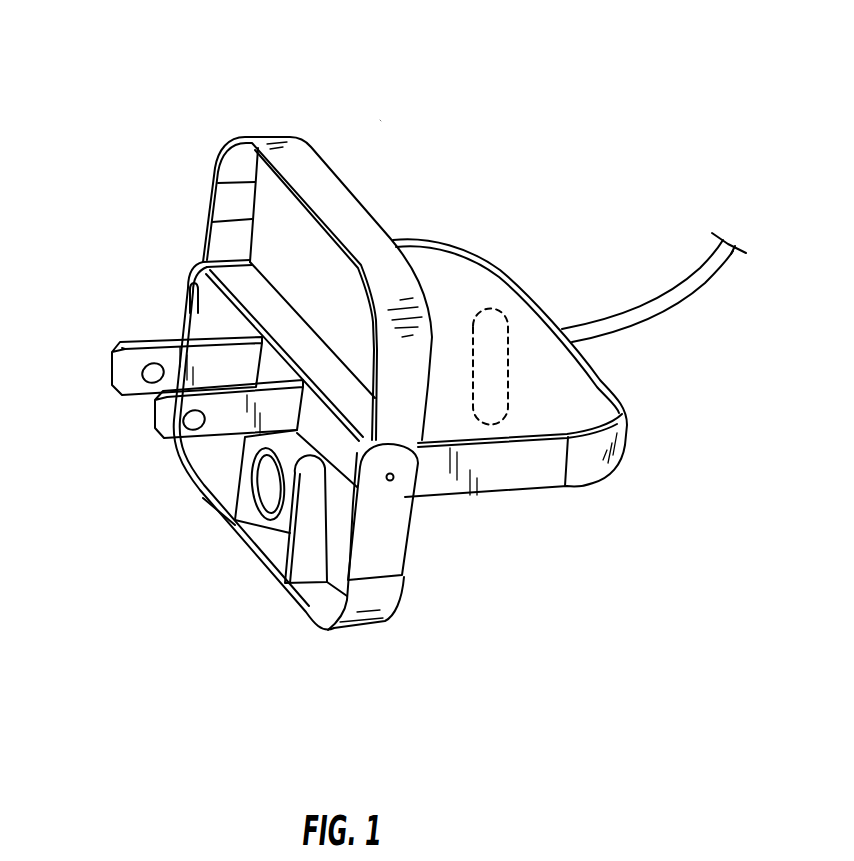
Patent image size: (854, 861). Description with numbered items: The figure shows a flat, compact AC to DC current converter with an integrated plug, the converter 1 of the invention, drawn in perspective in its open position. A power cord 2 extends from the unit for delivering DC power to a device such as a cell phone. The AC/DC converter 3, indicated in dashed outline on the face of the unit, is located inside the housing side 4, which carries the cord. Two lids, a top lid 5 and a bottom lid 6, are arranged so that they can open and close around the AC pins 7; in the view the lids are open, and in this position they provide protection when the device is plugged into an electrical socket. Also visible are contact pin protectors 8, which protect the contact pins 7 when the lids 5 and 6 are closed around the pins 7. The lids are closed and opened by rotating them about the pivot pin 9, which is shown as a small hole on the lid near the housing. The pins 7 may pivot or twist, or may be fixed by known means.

The converter 1 is at (393, 110).
The power cord 2 is at (678, 287).
The AC/DC converter 3 is at (503, 350).
The housing side 4 is at (510, 368).
The top lid 5 is at (210, 222).
The bottom lid 6 is at (262, 549).
The AC pins 7 is at (172, 352).
The contact pin protectors 8 is at (297, 576).
The pivot pin 9 is at (391, 481).